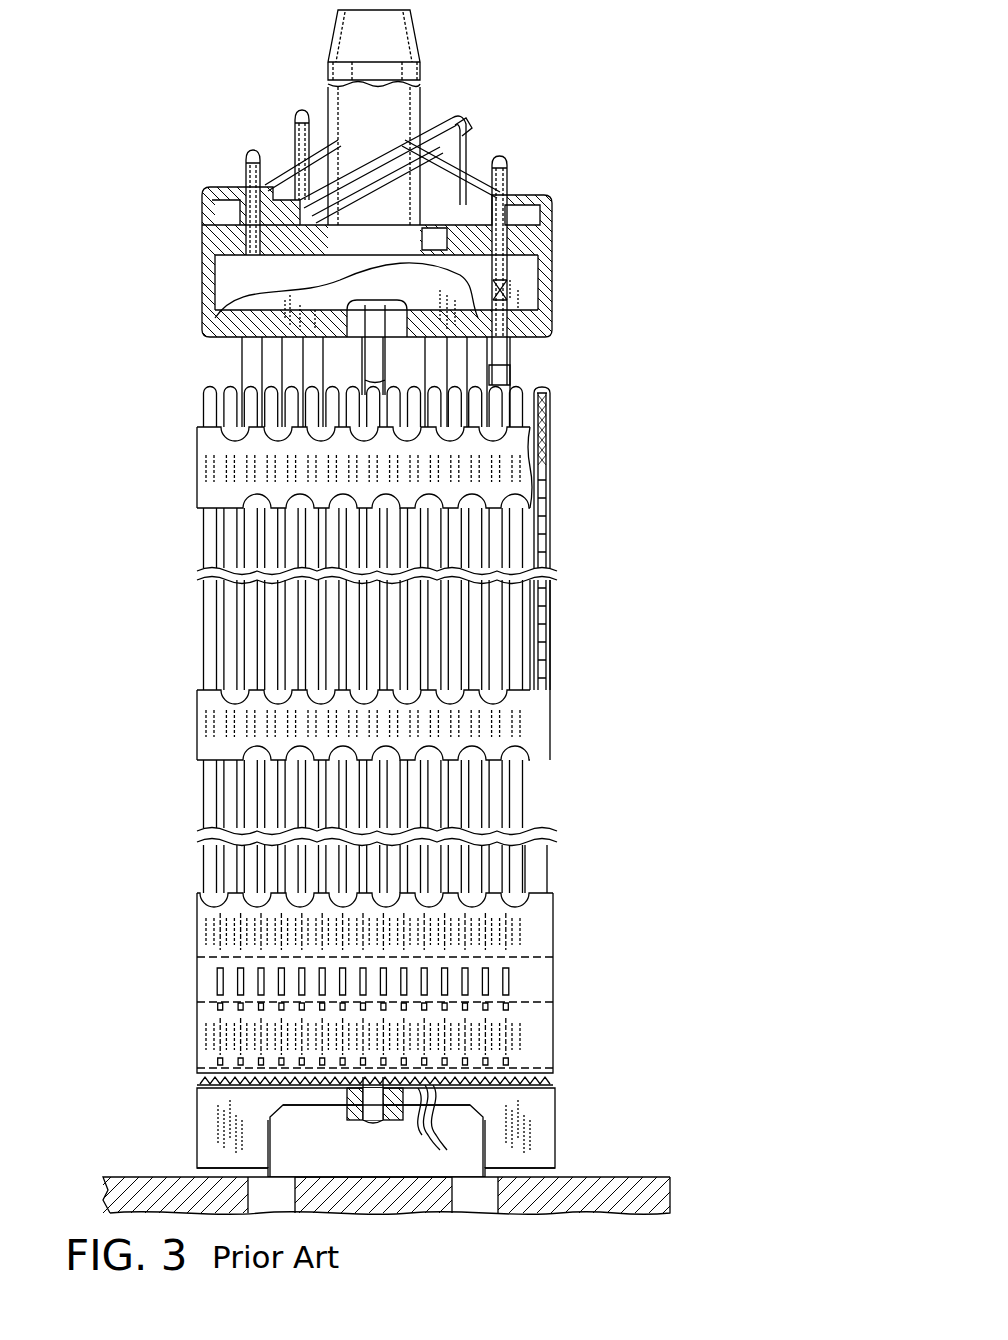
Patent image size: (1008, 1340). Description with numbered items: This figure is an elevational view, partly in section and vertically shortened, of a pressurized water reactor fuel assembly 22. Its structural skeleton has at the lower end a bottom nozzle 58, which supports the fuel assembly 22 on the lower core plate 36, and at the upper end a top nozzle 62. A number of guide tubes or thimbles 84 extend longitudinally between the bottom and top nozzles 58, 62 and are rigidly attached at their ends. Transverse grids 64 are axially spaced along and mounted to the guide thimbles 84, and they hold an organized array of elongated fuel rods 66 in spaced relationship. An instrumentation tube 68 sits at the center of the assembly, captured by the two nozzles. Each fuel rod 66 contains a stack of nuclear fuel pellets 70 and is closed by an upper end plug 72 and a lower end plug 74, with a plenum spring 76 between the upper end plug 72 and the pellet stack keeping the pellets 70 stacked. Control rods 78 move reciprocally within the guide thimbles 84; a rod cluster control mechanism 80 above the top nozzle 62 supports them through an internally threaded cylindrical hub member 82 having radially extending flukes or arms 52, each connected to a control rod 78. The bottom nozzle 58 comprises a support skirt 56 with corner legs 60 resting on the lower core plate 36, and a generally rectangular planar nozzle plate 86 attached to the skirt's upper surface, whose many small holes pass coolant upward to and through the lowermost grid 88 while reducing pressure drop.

The fuel assembly 22 is at (640, 247).
The lower core plate 36 is at (603, 1180).
The flukes or arms 52 is at (318, 128).
The skirt 56 is at (557, 1092).
The bottom nozzle 58 is at (572, 1120).
The corner legs 60 is at (197, 1148).
The top nozzle 62 is at (560, 234).
The transverse grids 64 is at (197, 480).
The fuel rods 66 is at (200, 640).
The instrumentation tube 68 is at (383, 1120).
The nuclear fuel pellets 70 is at (548, 540).
The upper end plug 72 is at (552, 392).
The lower end plug 74 is at (448, 1122).
The plenum spring 76 is at (550, 457).
The control rods 78 is at (507, 297).
The rod cluster control mechanism 80 is at (474, 110).
The cylindrical hub member 82 is at (435, 88).
The guide tubes or thimbles 84 is at (515, 380).
The nozzle plate 86 is at (205, 1080).
The lowermost grid 88 is at (553, 980).